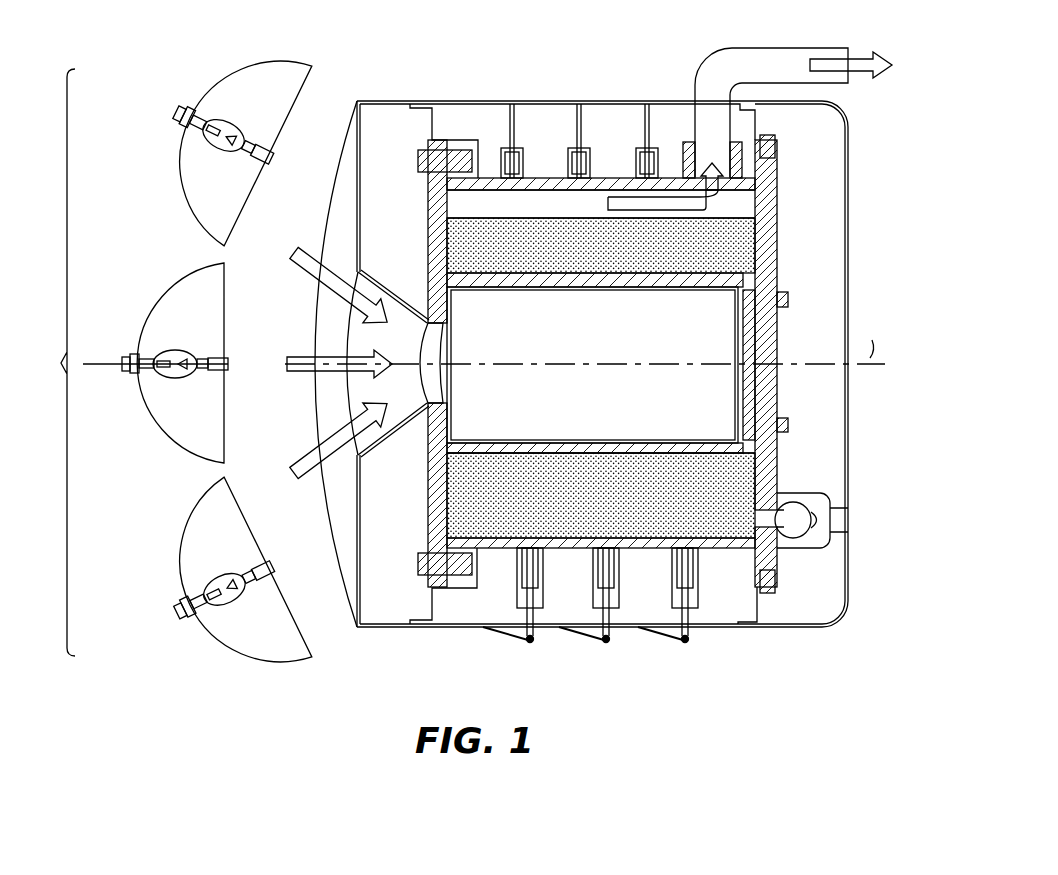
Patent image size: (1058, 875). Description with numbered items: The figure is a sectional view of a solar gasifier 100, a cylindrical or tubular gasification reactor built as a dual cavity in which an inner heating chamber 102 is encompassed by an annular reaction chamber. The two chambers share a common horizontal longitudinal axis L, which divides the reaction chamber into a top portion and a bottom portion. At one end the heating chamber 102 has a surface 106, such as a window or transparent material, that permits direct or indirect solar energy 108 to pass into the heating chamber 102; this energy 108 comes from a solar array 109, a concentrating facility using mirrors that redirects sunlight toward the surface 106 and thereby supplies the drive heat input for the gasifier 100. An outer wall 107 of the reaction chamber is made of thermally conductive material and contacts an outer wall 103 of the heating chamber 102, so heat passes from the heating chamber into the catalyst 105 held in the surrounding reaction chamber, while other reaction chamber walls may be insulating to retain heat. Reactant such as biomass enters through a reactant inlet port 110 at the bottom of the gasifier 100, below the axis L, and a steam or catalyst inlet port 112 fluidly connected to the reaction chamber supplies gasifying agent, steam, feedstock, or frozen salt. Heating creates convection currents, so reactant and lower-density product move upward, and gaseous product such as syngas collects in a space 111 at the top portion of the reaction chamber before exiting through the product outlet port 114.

The solar gasifier 100 is at (192, 32).
The heating chamber 102 is at (715, 344).
The outer wall of the heating chamber 103 is at (518, 440).
The catalyst 105 is at (465, 256).
The surface 106 is at (452, 351).
The outer wall of the reaction chamber 107 is at (612, 462).
The solar energy 108 is at (300, 278).
The solar array 109 is at (171, 361).
The reactant inlet port 110 is at (750, 519).
The space 111 is at (465, 203).
The steam or catalyst inlet port 112 is at (685, 546).
The product outlet port 114 is at (755, 56).